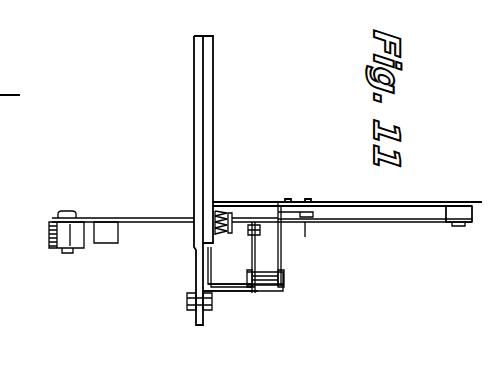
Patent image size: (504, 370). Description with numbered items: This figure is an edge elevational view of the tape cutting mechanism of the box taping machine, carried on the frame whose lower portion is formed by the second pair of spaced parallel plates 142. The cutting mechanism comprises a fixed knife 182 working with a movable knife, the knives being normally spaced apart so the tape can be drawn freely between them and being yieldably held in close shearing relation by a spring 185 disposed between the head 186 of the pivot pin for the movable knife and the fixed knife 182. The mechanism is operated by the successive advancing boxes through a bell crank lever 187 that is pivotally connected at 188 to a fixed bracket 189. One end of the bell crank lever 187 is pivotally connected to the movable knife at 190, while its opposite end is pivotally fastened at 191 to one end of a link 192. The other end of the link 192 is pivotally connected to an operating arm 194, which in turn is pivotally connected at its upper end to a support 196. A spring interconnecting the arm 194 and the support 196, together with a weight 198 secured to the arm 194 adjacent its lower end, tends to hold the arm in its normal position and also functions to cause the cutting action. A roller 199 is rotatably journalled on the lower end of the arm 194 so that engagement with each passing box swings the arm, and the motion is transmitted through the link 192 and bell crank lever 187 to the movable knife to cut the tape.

The spaced parallel plates 142 is at (372, 202).
The fixed knife 182 is at (213, 138).
The spring 185 is at (199, 151).
The head of the pivot pin 186 is at (235, 209).
The bell crank lever 187 is at (226, 292).
The pivot 188 is at (267, 287).
The fixed bracket 189 is at (277, 226).
The pivotal connection 190 is at (190, 301).
The pivotal fastening 191 is at (252, 226).
The link 192 is at (285, 277).
The operating arm 194 is at (370, 224).
The support 196 is at (456, 215).
The weight 198 is at (104, 240).
The roller 199 is at (75, 250).